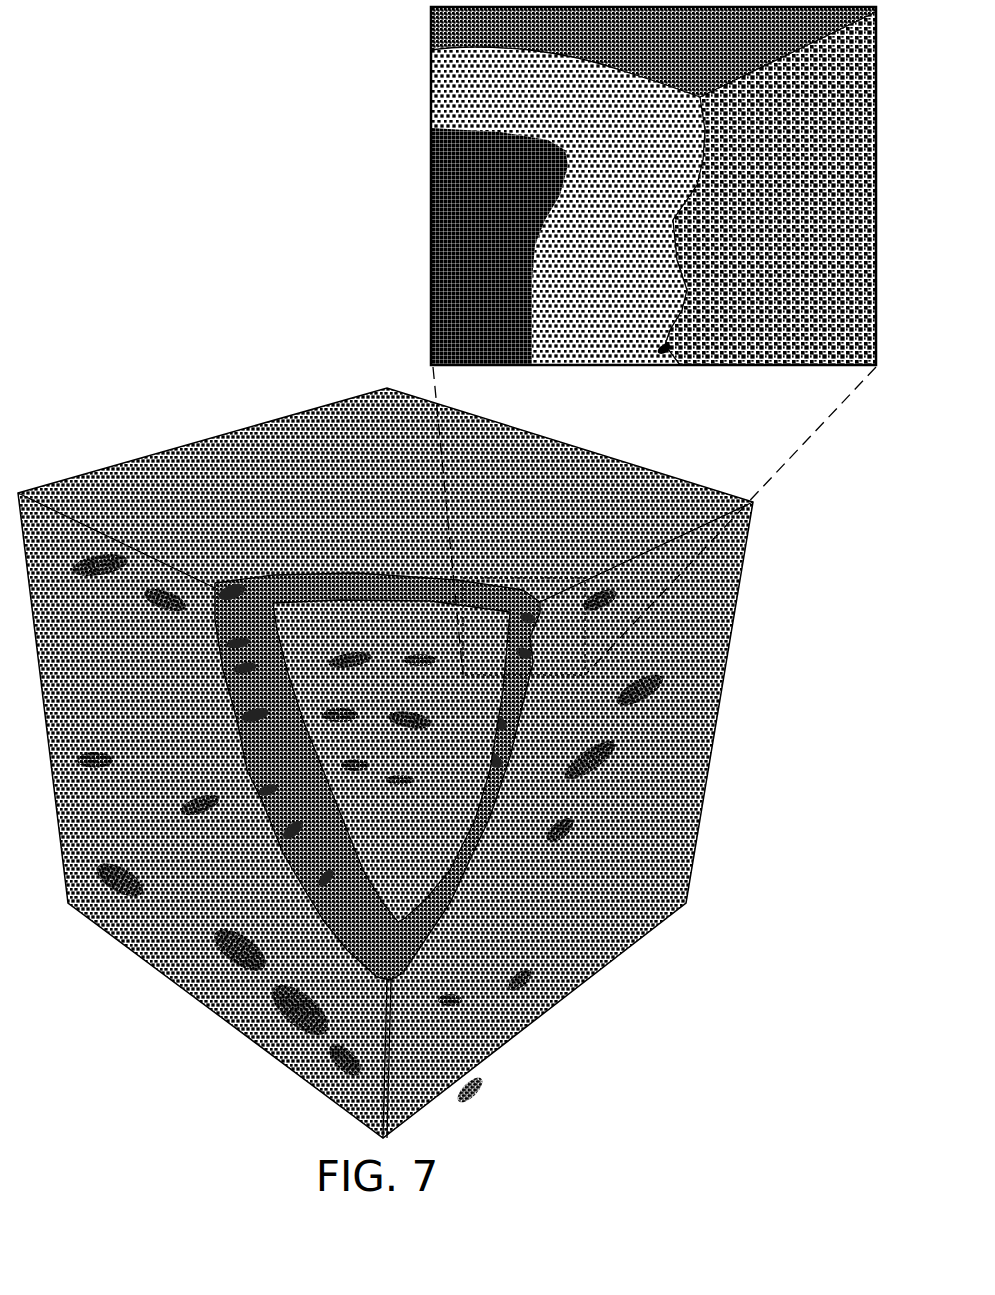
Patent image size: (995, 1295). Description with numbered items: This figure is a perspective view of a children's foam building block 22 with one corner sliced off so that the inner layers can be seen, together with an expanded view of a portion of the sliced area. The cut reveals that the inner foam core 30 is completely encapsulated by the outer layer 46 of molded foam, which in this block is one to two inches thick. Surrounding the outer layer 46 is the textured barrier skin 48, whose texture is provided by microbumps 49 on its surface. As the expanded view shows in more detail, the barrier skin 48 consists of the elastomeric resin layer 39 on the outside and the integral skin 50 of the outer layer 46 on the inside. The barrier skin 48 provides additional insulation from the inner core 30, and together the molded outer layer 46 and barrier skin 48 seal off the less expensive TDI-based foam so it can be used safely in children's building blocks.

The children's foam building block 22 is at (211, 437).
The inner foam core 30 is at (408, 880).
The outer layer 46 is at (275, 801).
The barrier skin 48 is at (483, 811).
The microbumps 49 is at (791, 348).
The integral skin 50 is at (657, 344).
The elastomeric resin layer 39 is at (676, 354).